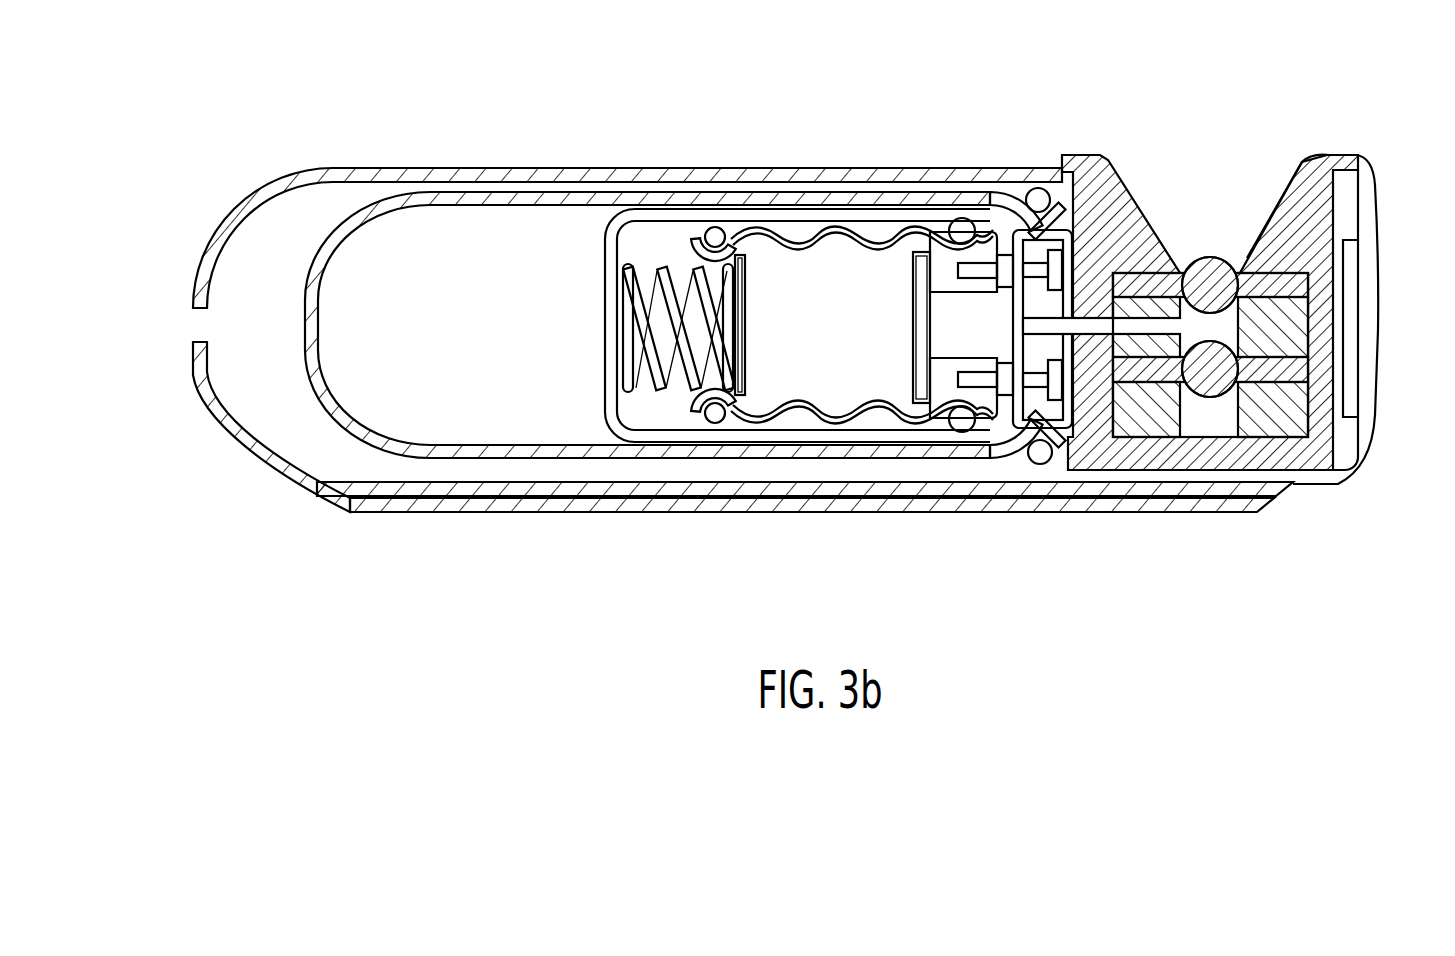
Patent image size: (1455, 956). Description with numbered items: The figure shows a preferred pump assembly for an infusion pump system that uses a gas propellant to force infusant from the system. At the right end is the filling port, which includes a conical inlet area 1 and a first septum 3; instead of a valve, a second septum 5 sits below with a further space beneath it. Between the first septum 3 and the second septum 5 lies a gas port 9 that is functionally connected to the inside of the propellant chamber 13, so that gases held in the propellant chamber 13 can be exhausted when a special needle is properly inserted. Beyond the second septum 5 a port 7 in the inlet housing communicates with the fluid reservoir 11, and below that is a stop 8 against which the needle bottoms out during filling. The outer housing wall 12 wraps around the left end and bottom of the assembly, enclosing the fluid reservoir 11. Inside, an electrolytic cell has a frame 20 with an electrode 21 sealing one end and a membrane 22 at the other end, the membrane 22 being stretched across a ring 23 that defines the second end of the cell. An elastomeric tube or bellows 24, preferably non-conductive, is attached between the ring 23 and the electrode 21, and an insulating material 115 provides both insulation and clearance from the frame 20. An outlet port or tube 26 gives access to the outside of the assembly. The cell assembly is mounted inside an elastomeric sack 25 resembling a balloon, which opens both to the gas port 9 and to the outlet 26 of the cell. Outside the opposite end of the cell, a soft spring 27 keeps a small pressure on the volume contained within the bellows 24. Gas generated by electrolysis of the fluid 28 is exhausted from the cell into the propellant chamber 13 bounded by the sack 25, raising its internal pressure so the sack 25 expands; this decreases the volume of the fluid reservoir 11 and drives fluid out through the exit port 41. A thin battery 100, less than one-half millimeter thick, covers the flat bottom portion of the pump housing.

The conical inlet area 1 is at (1284, 186).
The first septum 3 is at (1296, 288).
The second septum 5 is at (1297, 370).
The port 7 is at (1203, 410).
The stop 8 is at (1133, 508).
The gas port 9 is at (1200, 303).
The fluid reservoir 11 is at (283, 223).
The lower shell 12 is at (247, 448).
The propellant chamber 13 is at (428, 232).
The frame 20 is at (758, 445).
The electrode 21 is at (747, 327).
The membrane 22 is at (910, 315).
The ring 23 is at (925, 420).
The bellows 24 is at (772, 230).
The elastomeric sack 25 is at (370, 445).
The outlet port 26 is at (950, 317).
The soft spring 27 is at (660, 378).
The fluid 28 is at (843, 270).
The exit port 41 is at (218, 326).
The battery 100 is at (448, 500).
The insulating material 115 is at (1038, 190).